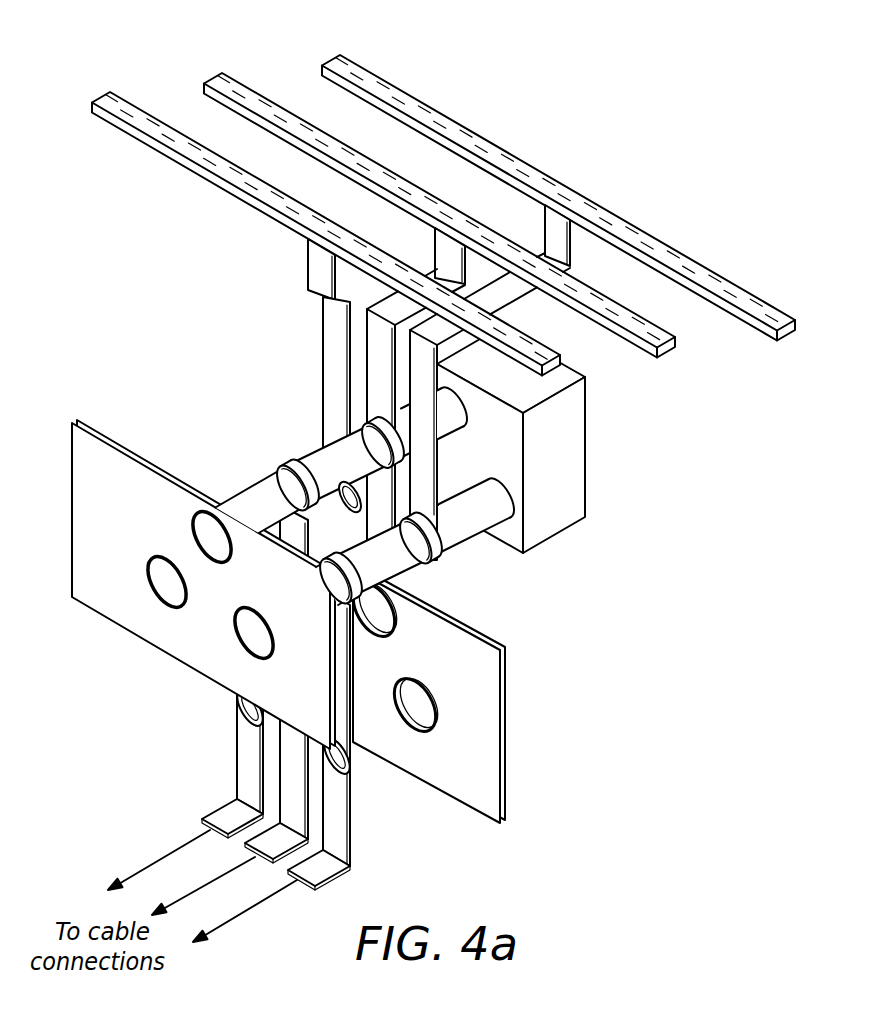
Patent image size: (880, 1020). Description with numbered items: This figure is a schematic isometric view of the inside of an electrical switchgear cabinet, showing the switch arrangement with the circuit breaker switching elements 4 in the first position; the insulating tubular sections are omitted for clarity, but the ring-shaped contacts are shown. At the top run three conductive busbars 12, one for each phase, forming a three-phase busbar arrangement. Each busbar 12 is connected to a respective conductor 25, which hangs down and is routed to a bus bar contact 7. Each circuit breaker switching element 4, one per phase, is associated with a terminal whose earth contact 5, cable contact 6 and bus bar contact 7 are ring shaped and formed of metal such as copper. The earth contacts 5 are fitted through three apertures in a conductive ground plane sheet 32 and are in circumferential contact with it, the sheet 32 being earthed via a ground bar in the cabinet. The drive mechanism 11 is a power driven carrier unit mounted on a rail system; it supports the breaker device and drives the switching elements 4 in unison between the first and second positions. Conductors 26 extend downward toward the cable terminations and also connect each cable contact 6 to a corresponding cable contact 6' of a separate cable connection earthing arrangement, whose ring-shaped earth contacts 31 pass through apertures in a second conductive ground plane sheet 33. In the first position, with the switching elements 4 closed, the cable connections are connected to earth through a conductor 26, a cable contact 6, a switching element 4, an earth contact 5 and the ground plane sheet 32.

The circuit breaker switching element 4 is at (256, 492).
The earth contact 5 is at (198, 537).
The cable contact 6 is at (308, 515).
The cable contact 6' is at (293, 750).
The bus bar contact 7 is at (398, 446).
The drive mechanism 11 is at (562, 538).
The busbar 12 is at (100, 95).
The conductor 25 is at (323, 365).
The conductor 26 is at (288, 790).
The earth contact 31 is at (393, 627).
The ground plane sheet 32 is at (72, 500).
The ground plane sheet 33 is at (500, 726).